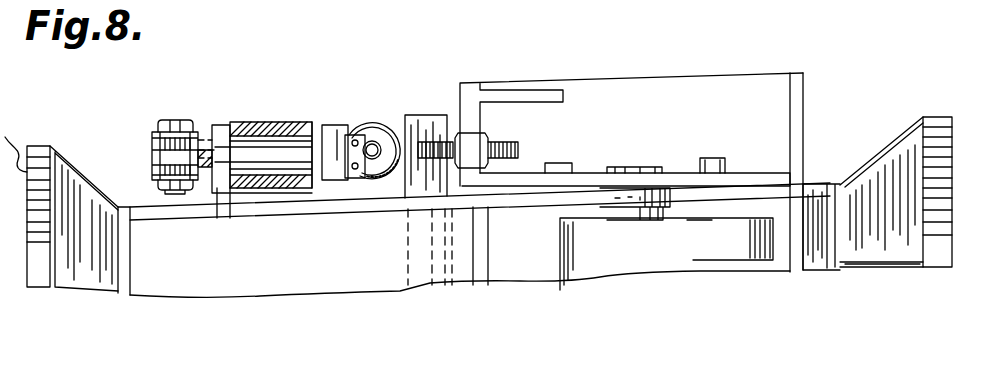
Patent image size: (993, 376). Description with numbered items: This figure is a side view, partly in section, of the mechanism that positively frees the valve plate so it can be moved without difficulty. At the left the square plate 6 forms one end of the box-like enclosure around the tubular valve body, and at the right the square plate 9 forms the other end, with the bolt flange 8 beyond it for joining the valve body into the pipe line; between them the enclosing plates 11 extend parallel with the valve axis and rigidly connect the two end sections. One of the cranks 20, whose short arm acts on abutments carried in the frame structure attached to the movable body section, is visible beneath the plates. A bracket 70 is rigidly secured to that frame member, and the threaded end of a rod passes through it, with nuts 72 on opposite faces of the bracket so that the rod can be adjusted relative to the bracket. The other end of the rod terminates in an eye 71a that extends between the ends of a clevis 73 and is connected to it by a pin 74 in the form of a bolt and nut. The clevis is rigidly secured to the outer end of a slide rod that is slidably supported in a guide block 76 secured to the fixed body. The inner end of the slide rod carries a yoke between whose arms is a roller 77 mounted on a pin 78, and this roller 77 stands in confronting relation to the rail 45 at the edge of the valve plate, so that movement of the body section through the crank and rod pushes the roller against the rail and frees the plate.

The square plate 6 is at (132, 252).
The bolt flange 8 is at (950, 142).
The square plate 9 is at (835, 185).
The enclosing plates 11 is at (303, 215).
The crank 20 is at (743, 232).
The angle or rail 45 is at (415, 115).
The bracket 70 is at (468, 100).
The eye 71a is at (152, 165).
The nuts 72 is at (460, 138).
The clevis 73 is at (150, 137).
The pin 74 is at (180, 120).
The guide block 76 is at (262, 122).
The roller 77 is at (400, 125).
The pin 78 is at (372, 142).